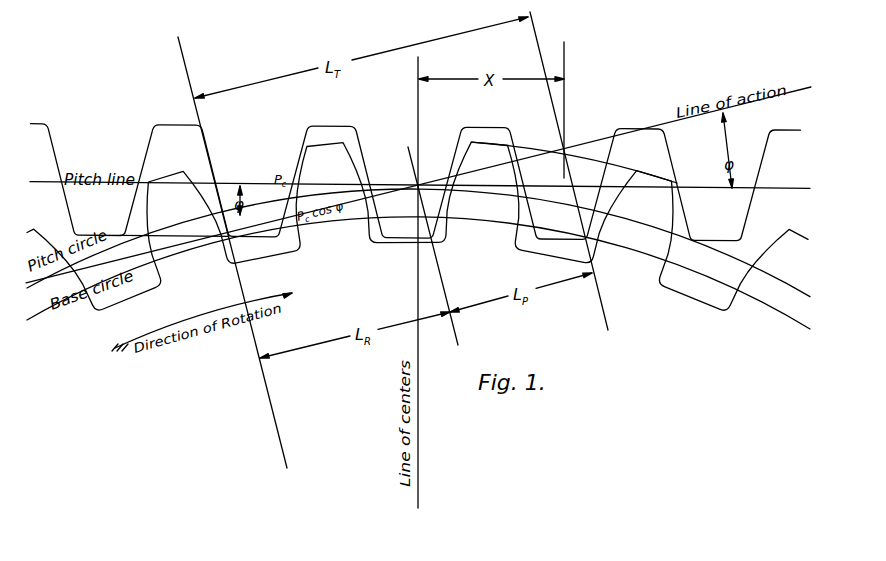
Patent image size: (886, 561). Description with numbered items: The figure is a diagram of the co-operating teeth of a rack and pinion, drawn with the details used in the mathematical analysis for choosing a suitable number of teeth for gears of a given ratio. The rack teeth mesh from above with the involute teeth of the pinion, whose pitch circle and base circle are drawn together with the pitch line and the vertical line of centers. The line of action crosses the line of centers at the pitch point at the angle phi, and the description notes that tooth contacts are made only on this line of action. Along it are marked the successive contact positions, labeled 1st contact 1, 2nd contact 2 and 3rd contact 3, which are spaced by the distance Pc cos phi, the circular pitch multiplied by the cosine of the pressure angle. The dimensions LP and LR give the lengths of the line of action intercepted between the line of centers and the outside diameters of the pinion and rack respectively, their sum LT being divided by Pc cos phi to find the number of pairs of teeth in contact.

The 1st contact point 1 is at (520, 160).
The 2nd contact point 2 is at (378, 200).
The 3rd contact point 3 is at (232, 242).